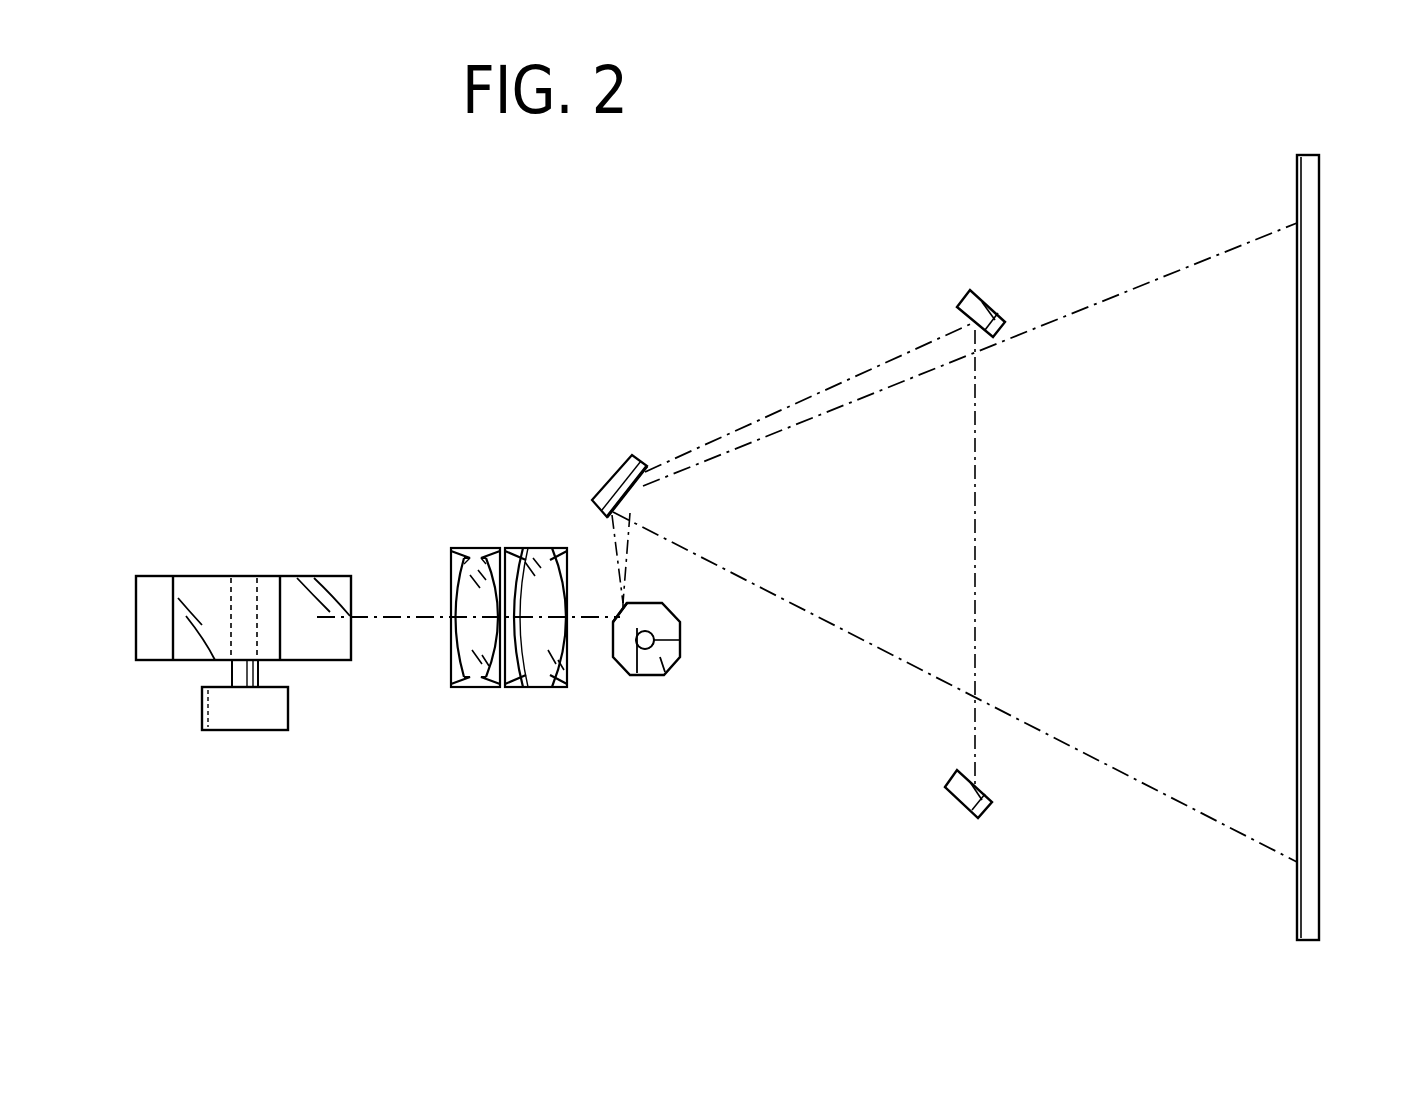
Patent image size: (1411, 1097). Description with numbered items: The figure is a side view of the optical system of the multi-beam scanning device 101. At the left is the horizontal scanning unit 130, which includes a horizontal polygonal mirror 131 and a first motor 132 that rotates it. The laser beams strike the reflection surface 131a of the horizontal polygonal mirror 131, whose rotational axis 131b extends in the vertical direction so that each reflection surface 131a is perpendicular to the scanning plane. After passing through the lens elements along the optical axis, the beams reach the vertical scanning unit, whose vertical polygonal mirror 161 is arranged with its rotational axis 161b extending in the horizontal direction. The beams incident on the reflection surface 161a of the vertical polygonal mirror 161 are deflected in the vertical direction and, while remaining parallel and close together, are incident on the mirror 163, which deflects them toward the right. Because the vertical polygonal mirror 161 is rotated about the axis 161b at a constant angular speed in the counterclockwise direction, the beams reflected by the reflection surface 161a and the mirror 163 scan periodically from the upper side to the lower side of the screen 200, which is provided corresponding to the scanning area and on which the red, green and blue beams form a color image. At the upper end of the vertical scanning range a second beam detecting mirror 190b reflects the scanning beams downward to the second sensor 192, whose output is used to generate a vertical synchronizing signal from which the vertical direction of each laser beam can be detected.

The multi-beam scanning device 101 is at (380, 302).
The horizontal scanning unit 130 is at (146, 538).
The horizontal polygonal mirror 131 is at (224, 578).
The reflection surface 131a is at (322, 585).
The rotational axis 131b is at (258, 668).
The first motor 132 is at (244, 710).
The vertical polygonal mirror 161 is at (640, 681).
The reflection surface 161a is at (613, 620).
The rotational axis 161b is at (680, 640).
The mirror 163 is at (617, 488).
The second beam detecting mirror 190b is at (1013, 270).
The second sensor 192 is at (965, 793).
The screen 200 is at (1310, 538).